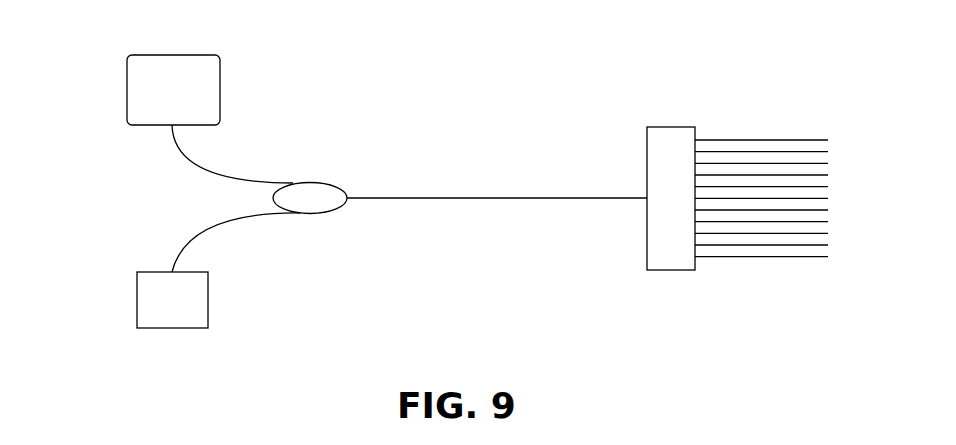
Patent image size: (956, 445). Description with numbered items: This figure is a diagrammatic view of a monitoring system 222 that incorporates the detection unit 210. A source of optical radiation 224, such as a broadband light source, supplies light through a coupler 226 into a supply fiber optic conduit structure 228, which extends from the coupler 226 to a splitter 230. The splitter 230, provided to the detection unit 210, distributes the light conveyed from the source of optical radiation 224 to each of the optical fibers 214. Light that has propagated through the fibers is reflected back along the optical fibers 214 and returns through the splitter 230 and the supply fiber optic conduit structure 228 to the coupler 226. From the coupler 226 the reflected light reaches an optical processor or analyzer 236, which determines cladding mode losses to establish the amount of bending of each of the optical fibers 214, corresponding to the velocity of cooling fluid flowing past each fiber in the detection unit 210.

The detection unit 210 is at (751, 119).
The optical fibers 214 is at (769, 257).
The monitoring system 222 is at (424, 96).
The source of optical radiation 224 is at (127, 89).
The coupler 226 is at (310, 182).
The supply fiber optic conduit structure 228 is at (478, 199).
The splitter 230 is at (675, 126).
The optical processor or analyzer 236 is at (137, 300).